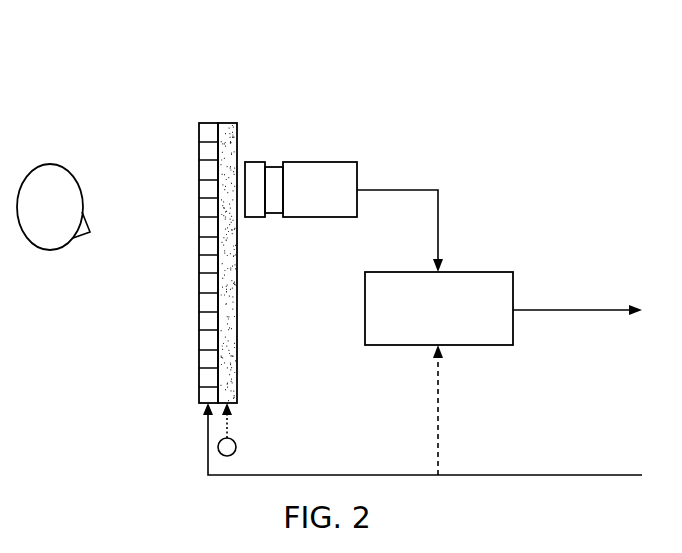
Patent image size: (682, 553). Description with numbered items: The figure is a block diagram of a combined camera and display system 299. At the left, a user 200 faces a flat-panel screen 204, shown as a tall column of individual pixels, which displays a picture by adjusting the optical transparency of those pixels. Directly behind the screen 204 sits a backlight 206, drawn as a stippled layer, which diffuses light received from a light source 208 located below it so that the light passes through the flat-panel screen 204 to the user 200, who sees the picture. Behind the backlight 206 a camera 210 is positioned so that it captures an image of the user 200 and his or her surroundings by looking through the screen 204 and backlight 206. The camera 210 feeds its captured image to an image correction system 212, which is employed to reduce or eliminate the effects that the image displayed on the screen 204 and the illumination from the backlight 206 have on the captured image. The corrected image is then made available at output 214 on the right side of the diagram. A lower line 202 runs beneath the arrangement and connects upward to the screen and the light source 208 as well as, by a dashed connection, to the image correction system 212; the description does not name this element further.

The combined camera and display system 299 is at (384, 32).
The user 200 is at (53, 207).
The control signal line 202 is at (422, 410).
The flat-panel screen 204 is at (208, 123).
The backlight 206 is at (228, 123).
The light source 208 is at (236, 447).
The camera 210 is at (344, 217).
The image correction system 212 is at (439, 296).
The output 214 is at (577, 299).